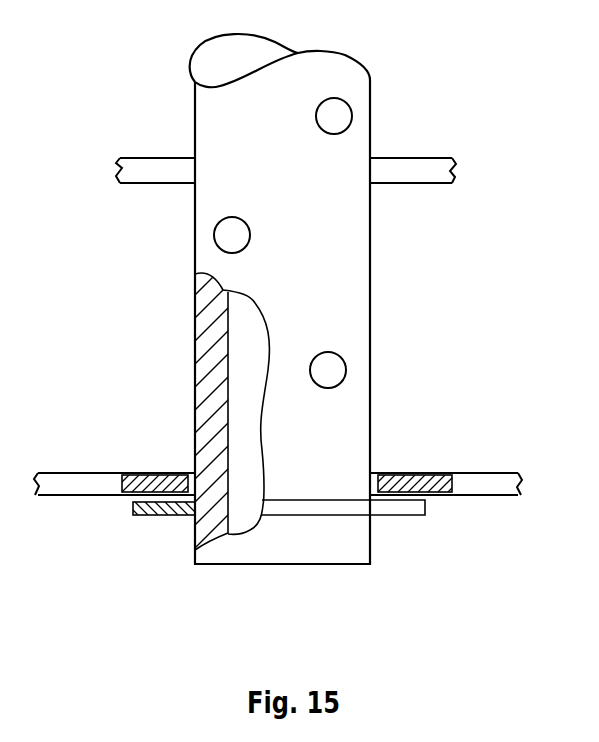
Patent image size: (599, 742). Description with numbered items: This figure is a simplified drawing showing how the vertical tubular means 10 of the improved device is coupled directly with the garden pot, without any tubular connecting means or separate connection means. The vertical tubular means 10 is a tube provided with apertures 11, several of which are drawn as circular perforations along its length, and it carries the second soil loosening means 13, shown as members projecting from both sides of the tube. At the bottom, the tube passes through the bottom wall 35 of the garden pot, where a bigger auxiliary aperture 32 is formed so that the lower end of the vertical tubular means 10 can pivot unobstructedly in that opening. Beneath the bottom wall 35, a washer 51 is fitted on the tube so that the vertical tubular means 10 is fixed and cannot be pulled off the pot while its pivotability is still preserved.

The vertical tubular means 10 is at (352, 281).
The apertures 11 is at (343, 118).
The second soil loosening means 13 is at (157, 172).
The auxiliary aperture 32 is at (375, 480).
The bottom wall 35 is at (78, 478).
The washer 51 is at (153, 523).